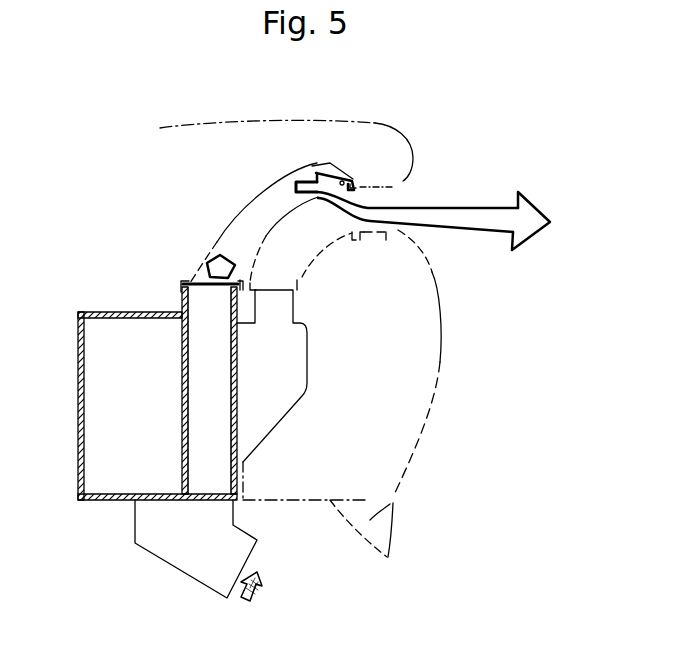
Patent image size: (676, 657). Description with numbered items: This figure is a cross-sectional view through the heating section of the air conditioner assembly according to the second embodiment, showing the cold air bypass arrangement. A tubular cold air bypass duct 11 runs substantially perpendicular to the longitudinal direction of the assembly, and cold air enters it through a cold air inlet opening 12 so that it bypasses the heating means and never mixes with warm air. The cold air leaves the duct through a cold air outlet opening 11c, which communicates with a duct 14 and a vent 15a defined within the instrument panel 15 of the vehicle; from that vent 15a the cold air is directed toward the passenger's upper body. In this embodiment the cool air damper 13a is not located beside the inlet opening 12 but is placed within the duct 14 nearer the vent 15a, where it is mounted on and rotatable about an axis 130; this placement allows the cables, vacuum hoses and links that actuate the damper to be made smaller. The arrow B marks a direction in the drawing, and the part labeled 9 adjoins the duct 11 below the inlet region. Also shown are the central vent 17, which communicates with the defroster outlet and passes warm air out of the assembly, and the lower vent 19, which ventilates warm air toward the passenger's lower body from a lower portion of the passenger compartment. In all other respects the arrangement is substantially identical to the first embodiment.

The case body 9 is at (114, 501).
The cold air bypass duct 11 is at (232, 375).
The cold air outlet opening 11c is at (198, 282).
The cold air inlet opening 12 is at (203, 443).
The cool air damper 13a is at (328, 170).
The axis 130 is at (347, 176).
The duct 14 is at (241, 208).
The instrument panel 15 is at (373, 118).
The vent 15a is at (397, 208).
The central vent 17 is at (279, 288).
The vent 19 is at (253, 555).
The direction arrow B is at (224, 249).